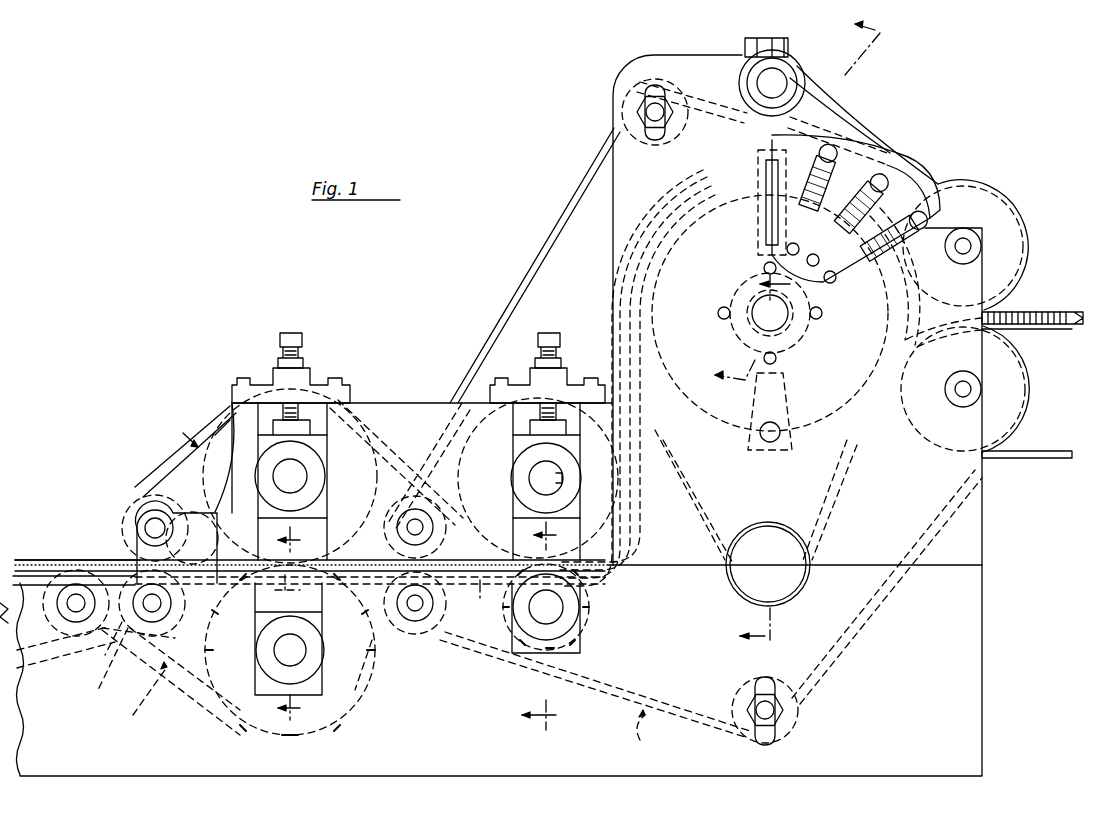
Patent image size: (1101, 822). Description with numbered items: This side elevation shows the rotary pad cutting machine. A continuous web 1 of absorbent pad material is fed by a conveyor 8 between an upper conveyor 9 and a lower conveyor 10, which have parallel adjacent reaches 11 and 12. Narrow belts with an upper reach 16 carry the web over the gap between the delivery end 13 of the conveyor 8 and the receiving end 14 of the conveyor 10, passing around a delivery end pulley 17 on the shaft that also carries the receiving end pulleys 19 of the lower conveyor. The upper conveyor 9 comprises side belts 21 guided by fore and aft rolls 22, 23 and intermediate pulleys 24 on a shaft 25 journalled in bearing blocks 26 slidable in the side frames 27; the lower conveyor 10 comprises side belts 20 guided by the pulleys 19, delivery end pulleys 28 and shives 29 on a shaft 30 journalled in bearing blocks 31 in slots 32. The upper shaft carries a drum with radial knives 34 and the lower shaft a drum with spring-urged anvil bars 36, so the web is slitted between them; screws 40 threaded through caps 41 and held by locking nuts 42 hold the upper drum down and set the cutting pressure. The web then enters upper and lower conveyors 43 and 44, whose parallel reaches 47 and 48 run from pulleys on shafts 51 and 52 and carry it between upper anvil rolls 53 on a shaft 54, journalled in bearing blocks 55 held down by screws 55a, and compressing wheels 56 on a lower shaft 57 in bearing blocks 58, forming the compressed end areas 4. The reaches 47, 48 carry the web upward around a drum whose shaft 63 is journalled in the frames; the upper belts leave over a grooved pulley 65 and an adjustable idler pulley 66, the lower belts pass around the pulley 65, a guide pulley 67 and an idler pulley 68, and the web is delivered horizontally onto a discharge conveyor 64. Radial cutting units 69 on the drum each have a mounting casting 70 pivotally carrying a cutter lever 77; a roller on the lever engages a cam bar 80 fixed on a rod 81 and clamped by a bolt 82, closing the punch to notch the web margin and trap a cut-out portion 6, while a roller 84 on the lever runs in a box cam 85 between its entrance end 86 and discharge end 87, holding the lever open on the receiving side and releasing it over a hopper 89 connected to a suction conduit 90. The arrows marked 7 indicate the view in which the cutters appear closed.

The web 1 is at (34, 568).
The conveyor 8 is at (52, 566).
The upper reach 16 is at (100, 568).
The delivery end 13 is at (100, 653).
The adjacent reach 12 is at (185, 607).
The receiving end 14 is at (111, 662).
The receiving end pulleys 19 is at (143, 642).
The side belts 20 is at (171, 681).
The lower conveyor 10 is at (147, 694).
The delivery end pulley 17 is at (146, 641).
The adjacent reach 11 is at (192, 538).
The fore roll 22 is at (147, 512).
The side belts 21 is at (168, 490).
The upper conveyor 9 is at (184, 430).
The intermediate pulleys 24 is at (205, 457).
The knives 34 is at (216, 436).
The screws 40 is at (298, 410).
The locking nuts 42 is at (280, 362).
The caps 41 is at (300, 372).
The upper shaft 25 is at (298, 478).
The bearing blocks 26 is at (320, 442).
The anvil bars 36 is at (288, 635).
The bearing blocks 31 is at (258, 628).
The lower shaft 30 is at (298, 650).
The slots 32 is at (325, 612).
The compressed end areas 4 is at (295, 623).
The upper conveyor 43 is at (502, 308).
The aft roll 23 is at (400, 465).
The upper shaft 51 is at (420, 528).
The lower shaft 52 is at (417, 612).
The adjacent reach 47 is at (489, 524).
The adjacent reach 48 is at (479, 597).
The delivery end pulleys 28 is at (445, 608).
The intermediate pulleys 29 is at (380, 678).
The lower conveyor 44 is at (595, 692).
The bearing blocks 55 is at (568, 444).
The adjustable screws 55a is at (565, 400).
The shaft 54 is at (538, 478).
The anvil rolls 53 is at (532, 478).
The compressing wheels 56 is at (580, 597).
The lower shaft 57 is at (552, 618).
The bearing blocks 58 is at (582, 583).
The cut-out marginal portion 6 is at (545, 626).
The box cam 85 is at (905, 320).
The shaft 63 is at (760, 306).
The cutter carrying levers 77 is at (851, 217).
The discharge end 87 is at (766, 165).
The mounting casting 70 is at (785, 230).
The cutting mechanism units 69 is at (868, 200).
The entrance end 86 is at (886, 262).
The roller 84 is at (941, 214).
The idler pulley 66 is at (622, 114).
The rod 81 is at (778, 80).
The clamping bolt 82 is at (746, 45).
The section line 7 is at (783, 198).
The cam bar 80 is at (848, 122).
The grooved pulley 65 is at (1024, 238).
The guide pulley 67 is at (1015, 400).
The discharge conveyor 64 is at (1048, 330).
The receiving hopper 89 is at (823, 503).
The conduit 90 is at (800, 580).
The idler pulley 68 is at (790, 708).
The side frames 27 is at (982, 554).